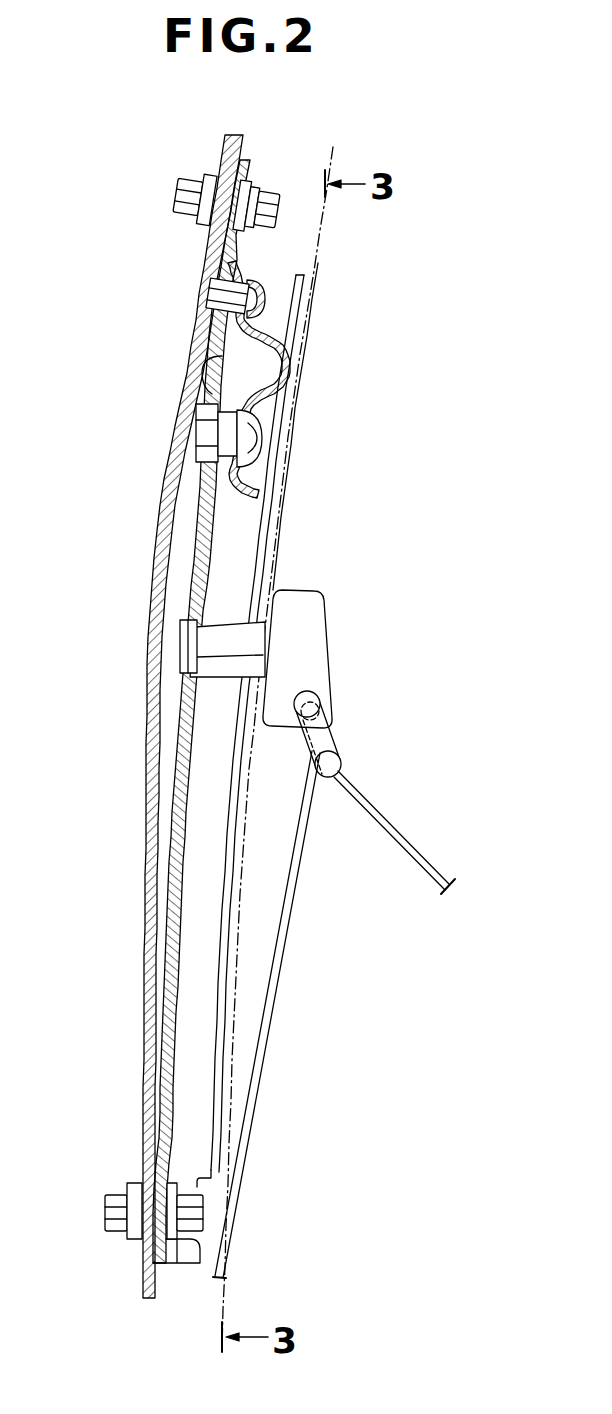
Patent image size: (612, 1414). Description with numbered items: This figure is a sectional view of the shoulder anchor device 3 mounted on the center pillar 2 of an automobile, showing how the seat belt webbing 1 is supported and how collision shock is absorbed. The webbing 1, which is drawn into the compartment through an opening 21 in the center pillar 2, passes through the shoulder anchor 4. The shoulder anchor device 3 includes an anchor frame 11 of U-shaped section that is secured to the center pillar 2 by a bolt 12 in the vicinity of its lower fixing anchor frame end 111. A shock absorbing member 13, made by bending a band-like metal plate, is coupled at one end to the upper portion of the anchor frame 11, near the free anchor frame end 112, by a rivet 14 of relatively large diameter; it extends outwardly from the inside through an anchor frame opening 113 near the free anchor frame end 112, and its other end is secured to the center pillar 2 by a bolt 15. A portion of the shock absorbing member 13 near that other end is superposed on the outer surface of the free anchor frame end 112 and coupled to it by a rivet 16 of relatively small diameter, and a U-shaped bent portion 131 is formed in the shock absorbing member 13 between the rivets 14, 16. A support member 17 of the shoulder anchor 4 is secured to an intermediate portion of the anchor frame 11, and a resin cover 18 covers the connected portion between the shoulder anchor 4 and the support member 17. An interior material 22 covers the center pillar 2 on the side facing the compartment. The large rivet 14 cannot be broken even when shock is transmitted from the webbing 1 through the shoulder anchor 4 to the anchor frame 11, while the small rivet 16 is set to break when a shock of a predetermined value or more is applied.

The webbing 1 is at (410, 836).
The center pillar 2 is at (152, 495).
The shoulder anchor device 3 is at (294, 553).
The shoulder anchor 4 is at (327, 733).
The anchor frame 11 is at (184, 576).
The fixing anchor frame end 111 is at (185, 1250).
The free anchor frame end 112 is at (307, 302).
The anchor frame opening 113 is at (187, 368).
The bolt 12 is at (110, 1217).
The shock absorbing member 13 is at (263, 322).
The U-shaped bent portion 131 is at (289, 378).
The rivet 14 is at (243, 443).
The bolt 15 is at (178, 196).
The rivet 16 is at (230, 293).
The support member 17 is at (227, 640).
The cover 18 is at (312, 623).
The opening 21 is at (230, 1194).
The interior material 22 is at (335, 160).